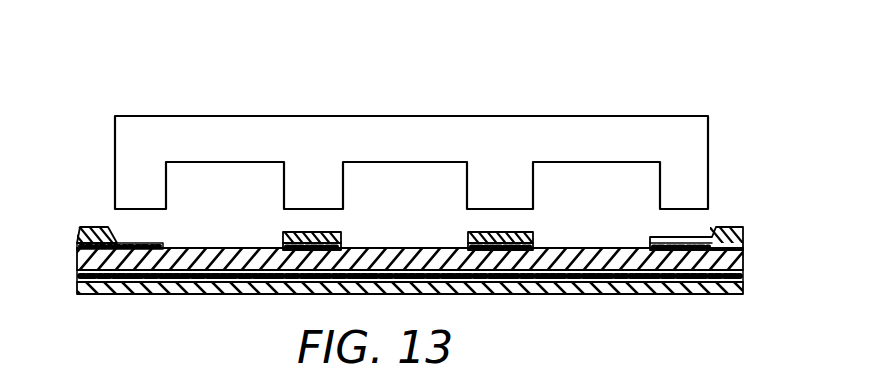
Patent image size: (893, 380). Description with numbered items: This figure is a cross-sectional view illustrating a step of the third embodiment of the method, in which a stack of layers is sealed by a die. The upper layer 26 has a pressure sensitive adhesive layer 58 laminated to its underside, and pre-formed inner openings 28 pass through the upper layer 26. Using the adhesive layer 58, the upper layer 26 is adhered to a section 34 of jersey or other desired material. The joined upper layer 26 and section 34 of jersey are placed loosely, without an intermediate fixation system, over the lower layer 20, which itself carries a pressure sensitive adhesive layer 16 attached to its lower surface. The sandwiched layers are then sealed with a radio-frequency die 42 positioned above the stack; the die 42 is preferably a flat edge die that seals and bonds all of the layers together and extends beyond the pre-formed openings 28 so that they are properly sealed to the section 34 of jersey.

The radio-frequency die 42 is at (325, 138).
The upper layer 26 is at (91, 235).
The pressure sensitive adhesive layer 58 is at (77, 243).
The pre-formed inner openings 28 is at (650, 238).
The section of jersey 34 is at (743, 268).
The lower layer 20 is at (743, 277).
The pressure sensitive adhesive layer 16 is at (697, 295).